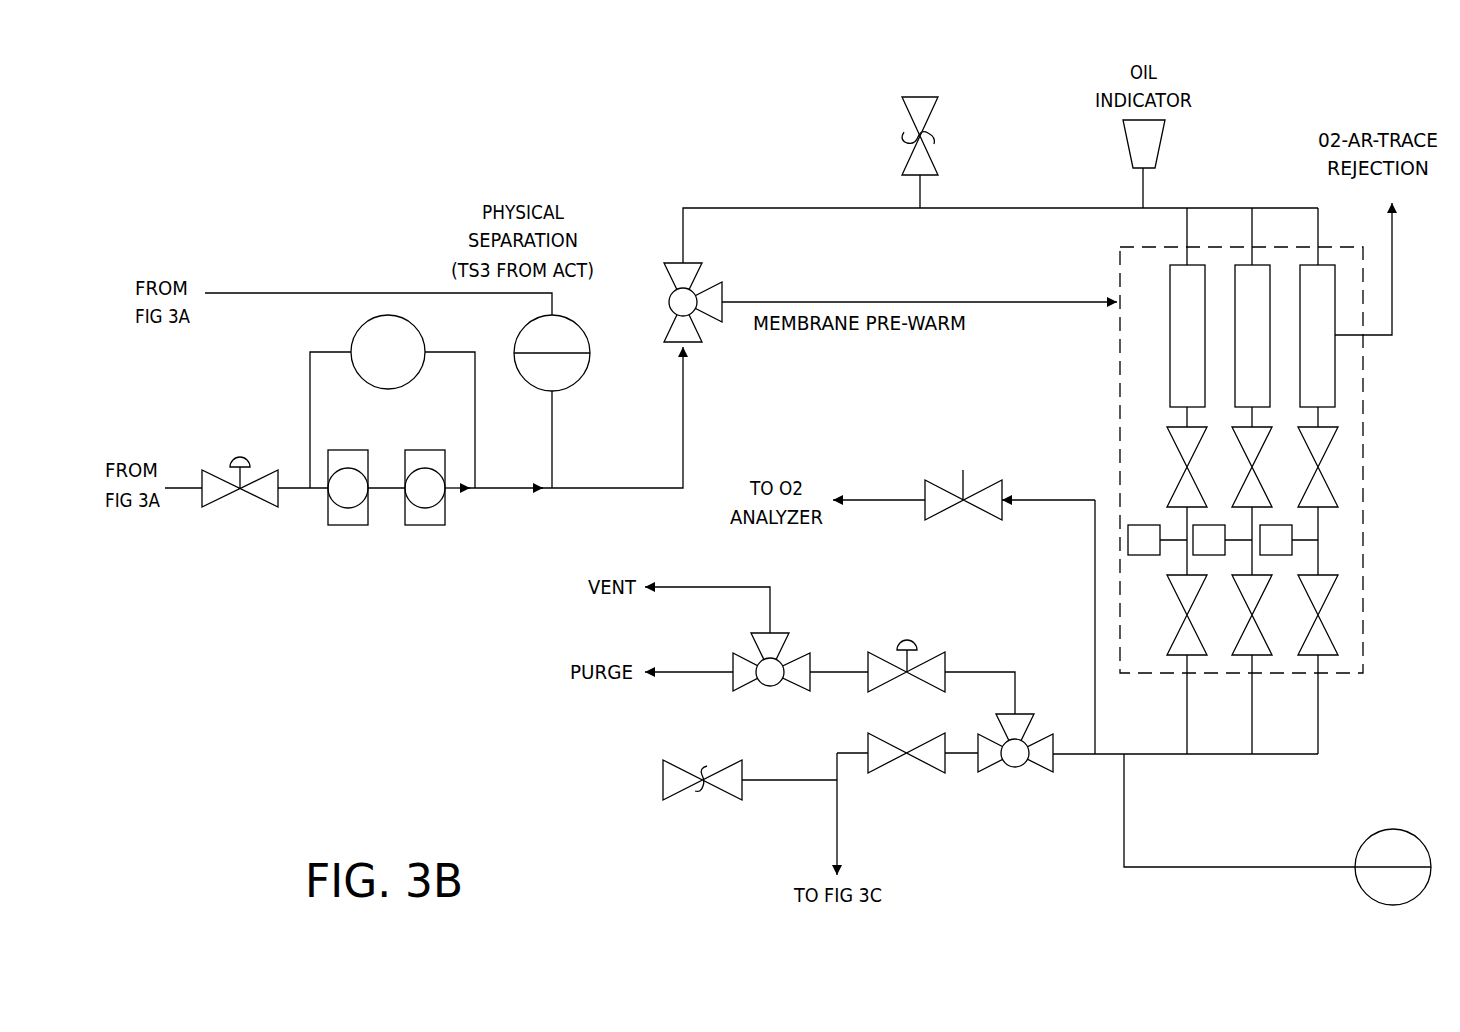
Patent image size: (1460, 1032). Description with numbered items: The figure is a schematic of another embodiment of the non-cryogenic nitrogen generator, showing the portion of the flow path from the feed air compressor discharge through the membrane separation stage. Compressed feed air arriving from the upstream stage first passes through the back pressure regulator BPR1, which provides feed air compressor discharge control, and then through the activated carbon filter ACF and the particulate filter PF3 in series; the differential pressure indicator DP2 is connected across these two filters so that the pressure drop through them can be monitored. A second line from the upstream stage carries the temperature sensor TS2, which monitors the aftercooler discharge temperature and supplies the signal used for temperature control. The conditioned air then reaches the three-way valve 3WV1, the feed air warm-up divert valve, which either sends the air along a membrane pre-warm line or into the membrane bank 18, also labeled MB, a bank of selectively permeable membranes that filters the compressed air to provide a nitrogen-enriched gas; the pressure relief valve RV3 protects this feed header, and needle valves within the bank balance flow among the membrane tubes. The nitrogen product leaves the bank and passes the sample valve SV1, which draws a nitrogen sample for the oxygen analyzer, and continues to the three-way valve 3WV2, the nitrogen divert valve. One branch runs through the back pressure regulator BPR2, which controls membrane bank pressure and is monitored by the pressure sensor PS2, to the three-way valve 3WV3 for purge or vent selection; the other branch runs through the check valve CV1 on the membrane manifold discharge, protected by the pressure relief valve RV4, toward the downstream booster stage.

The membrane bank 18 is at (1322, 372).
The back pressure regulator BPR1 is at (240, 501).
The activated carbon filter ACF is at (349, 472).
The particulate filter PF3 is at (425, 470).
The differential pressure indicator DP2 is at (392, 401).
The temperature sensor TS2 is at (552, 401).
The three-way valve 3WV1 is at (668, 302).
The pressure relief valve RV3 is at (918, 122).
The membrane bank MB is at (1277, 500).
The sample valve SV1 is at (970, 464).
The three-way valve 3WV3 is at (771, 681).
The back pressure regulator BPR2 is at (906, 646).
The three-way valve 3WV2 is at (1015, 760).
The check valve CV1 is at (906, 770).
The pressure relief valve RV4 is at (718, 809).
The pressure sensor PS2 is at (1393, 867).